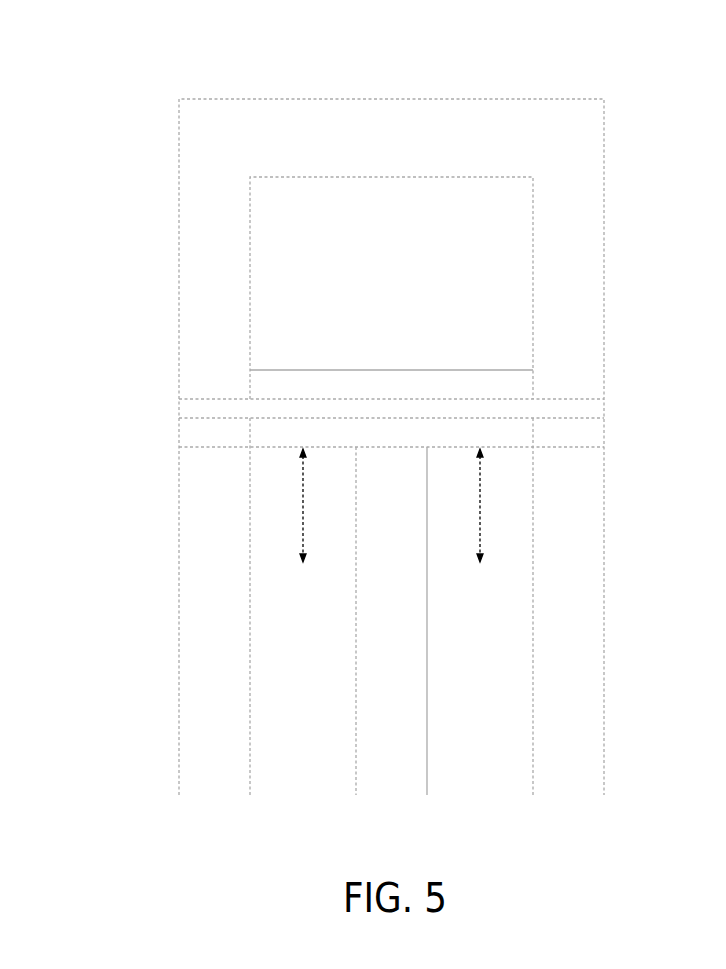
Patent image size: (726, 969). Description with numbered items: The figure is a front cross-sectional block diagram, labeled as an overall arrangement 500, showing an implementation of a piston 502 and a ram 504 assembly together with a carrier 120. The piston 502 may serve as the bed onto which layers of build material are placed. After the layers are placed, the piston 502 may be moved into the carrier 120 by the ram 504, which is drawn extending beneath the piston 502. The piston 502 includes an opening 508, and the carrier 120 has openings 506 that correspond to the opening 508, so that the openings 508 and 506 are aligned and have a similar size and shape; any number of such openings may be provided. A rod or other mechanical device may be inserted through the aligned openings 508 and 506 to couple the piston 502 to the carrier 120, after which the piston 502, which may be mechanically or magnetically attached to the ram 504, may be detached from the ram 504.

The display arrangement 500 is at (162, 60).
The carrier 120 is at (604, 132).
The piston 502 is at (390, 369).
The ram 504 is at (426, 675).
The openings 506 is at (198, 408).
The opening 508 is at (303, 398).